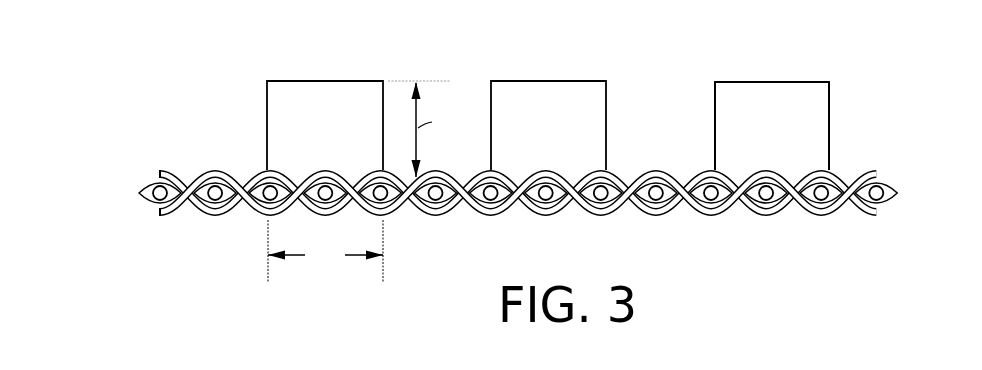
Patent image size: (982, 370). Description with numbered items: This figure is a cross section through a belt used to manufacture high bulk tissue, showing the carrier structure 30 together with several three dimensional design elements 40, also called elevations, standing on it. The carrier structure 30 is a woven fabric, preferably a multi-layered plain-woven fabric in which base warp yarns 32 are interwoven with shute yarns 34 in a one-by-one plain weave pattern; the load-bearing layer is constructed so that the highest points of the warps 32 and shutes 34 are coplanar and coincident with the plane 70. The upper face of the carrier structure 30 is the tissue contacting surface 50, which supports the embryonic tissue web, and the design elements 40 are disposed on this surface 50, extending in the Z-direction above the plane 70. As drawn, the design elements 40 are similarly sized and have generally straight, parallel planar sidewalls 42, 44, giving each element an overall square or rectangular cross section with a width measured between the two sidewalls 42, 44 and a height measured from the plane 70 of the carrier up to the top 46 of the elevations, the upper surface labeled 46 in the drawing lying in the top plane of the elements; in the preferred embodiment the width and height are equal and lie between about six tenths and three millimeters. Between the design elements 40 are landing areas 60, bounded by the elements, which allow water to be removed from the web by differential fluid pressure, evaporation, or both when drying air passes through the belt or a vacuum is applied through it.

The carrier structure 30 is at (818, 214).
The base warp yarns 32 is at (884, 192).
The shute yarns 34 is at (833, 172).
The design elements 40 is at (332, 95).
The sidewall 42 is at (715, 107).
The sidewall 44 is at (831, 98).
The top surface of spacer block 46 is at (310, 81).
The tissue contacting surface 50 is at (206, 93).
The landing areas 60 is at (233, 240).
The plane 70 is at (150, 158).